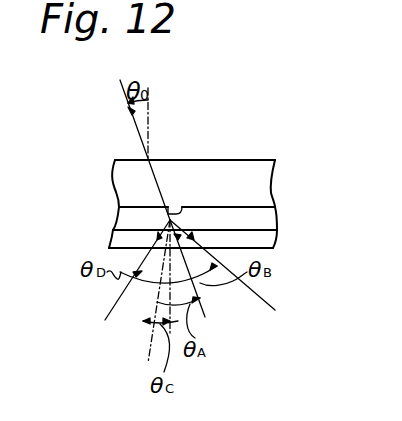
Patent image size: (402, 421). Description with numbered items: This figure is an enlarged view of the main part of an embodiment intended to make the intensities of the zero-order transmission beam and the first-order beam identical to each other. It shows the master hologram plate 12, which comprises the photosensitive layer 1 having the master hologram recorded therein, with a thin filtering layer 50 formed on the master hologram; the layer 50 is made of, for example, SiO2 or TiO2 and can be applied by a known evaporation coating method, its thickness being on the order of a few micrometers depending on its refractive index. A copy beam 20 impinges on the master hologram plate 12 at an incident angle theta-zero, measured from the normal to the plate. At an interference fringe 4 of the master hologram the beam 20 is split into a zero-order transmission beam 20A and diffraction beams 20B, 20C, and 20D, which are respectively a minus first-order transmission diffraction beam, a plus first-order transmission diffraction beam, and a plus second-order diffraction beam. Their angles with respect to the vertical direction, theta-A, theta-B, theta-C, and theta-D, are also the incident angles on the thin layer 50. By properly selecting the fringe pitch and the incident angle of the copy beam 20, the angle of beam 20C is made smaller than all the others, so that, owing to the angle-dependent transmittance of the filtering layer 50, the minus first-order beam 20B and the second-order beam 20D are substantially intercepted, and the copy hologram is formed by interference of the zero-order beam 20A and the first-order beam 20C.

The master hologram plate 12 is at (279, 185).
The photosensitive layer 1 is at (277, 215).
The thin filtering layer 50 is at (277, 238).
The interference fringe 4 is at (187, 208).
The copy beam 20 is at (137, 128).
The zero-order transmission beam 20A is at (205, 317).
The minus first-order transmission diffraction beam 20B is at (275, 310).
The plus first-order transmission diffraction beam 20C is at (153, 312).
The plus second-order diffraction beam 20D is at (109, 313).